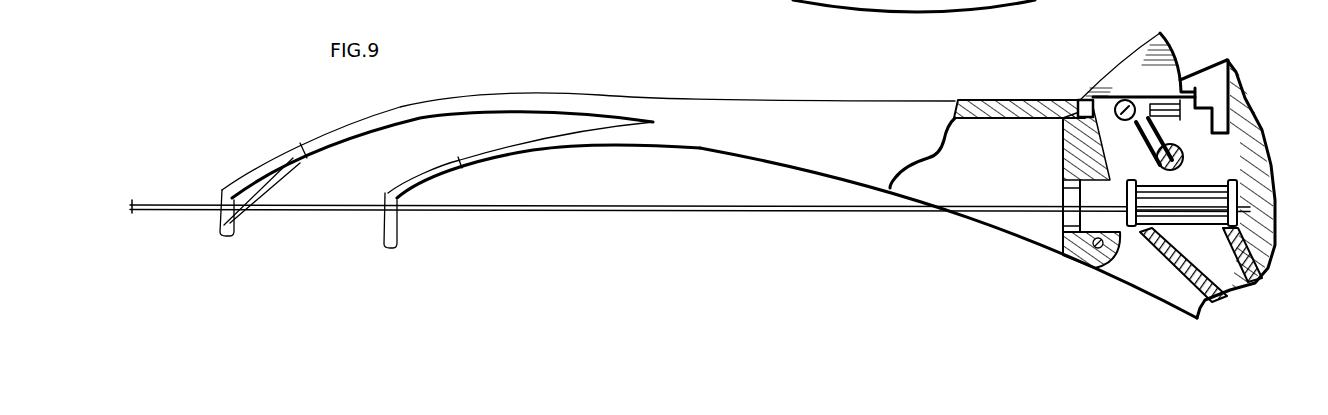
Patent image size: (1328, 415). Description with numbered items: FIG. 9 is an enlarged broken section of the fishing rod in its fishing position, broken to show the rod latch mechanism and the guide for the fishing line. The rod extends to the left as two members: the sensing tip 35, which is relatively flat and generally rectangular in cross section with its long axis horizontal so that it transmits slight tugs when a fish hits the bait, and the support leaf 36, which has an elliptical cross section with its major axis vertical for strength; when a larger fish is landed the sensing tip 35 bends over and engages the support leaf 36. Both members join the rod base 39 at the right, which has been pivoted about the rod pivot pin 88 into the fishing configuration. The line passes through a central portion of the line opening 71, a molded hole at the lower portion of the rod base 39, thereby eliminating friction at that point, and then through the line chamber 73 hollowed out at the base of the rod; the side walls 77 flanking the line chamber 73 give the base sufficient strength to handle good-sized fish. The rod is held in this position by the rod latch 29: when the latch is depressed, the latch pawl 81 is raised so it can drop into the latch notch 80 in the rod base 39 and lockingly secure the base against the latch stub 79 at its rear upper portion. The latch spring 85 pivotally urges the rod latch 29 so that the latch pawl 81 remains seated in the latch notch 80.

The rod latch 29 is at (1180, 33).
The sensing tip 35 is at (322, 138).
The support leaf 36 is at (573, 146).
The rod base 39 is at (1017, 100).
The line opening 71 is at (1067, 217).
The line chamber 73 is at (942, 173).
The side walls 77 is at (1003, 154).
The latch stub 79 is at (1103, 100).
The latch notch 80 is at (1144, 133).
The latch pawl 81 is at (1083, 98).
The latch spring 85 is at (1240, 112).
The rod pivot pin 88 is at (1093, 263).